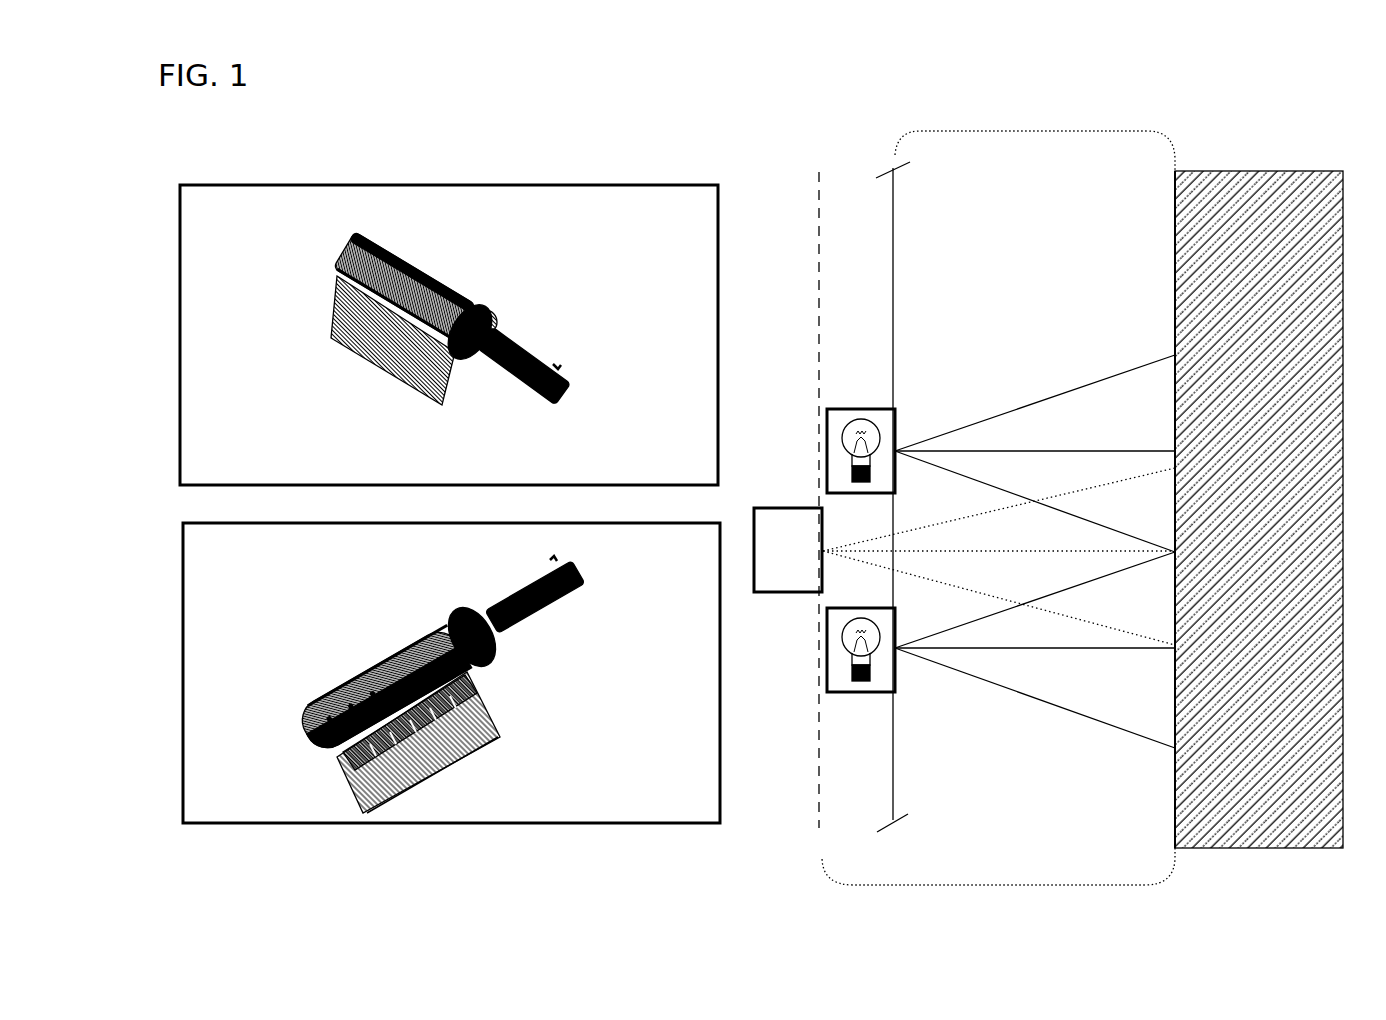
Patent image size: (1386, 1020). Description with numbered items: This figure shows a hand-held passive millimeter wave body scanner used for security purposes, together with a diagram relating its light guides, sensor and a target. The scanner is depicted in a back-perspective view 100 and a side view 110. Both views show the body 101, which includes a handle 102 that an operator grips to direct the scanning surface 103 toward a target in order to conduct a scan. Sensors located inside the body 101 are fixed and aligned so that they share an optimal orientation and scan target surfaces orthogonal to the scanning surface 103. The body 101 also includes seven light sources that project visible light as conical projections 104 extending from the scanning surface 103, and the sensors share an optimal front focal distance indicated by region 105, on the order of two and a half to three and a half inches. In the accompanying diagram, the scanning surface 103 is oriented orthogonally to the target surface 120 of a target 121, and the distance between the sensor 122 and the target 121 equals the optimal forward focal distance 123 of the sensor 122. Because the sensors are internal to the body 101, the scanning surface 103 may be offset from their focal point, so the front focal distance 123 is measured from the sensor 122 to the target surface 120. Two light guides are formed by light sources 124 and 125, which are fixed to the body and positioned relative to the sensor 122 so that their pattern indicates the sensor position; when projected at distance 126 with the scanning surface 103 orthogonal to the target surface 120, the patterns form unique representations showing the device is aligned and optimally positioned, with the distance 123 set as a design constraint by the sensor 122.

The back-perspective view 100 is at (237, 226).
The side view 110 is at (240, 569).
The body 101 is at (418, 270).
The handle 102 is at (527, 350).
The scanning surface 103 is at (400, 337).
The conical projections 104 is at (500, 774).
The region 105 is at (482, 692).
The target surface 120 is at (1175, 270).
The target 121 is at (1282, 166).
The sensor 122 is at (790, 593).
The optimal forward focal distance 123 is at (998, 885).
The light source 124 is at (885, 409).
The light source 125 is at (833, 692).
The distance 126 is at (1035, 131).